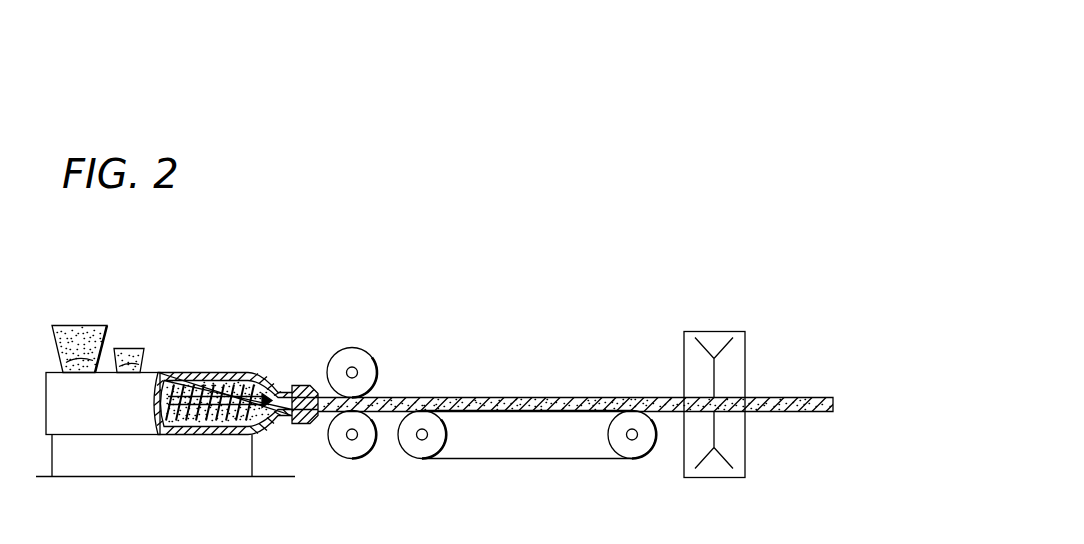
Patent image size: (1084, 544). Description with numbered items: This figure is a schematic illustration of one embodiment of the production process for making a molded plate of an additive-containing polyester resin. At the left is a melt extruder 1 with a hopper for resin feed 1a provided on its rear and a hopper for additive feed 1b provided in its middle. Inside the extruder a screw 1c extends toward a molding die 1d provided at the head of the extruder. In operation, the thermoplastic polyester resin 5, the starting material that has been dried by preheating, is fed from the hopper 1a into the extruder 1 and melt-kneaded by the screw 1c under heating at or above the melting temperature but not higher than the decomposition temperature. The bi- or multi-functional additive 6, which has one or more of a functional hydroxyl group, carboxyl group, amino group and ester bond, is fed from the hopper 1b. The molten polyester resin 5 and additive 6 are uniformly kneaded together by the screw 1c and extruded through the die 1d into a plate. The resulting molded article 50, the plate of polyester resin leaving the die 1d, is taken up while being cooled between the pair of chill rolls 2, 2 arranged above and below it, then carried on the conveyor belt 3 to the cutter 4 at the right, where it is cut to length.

The melt extruder 1 is at (223, 371).
The hopper for resin feed 1a is at (52, 326).
The hopper for additive feed 1b is at (143, 346).
The screw 1c is at (211, 436).
The molding die 1d is at (299, 385).
The pair of chill rolls 2 is at (352, 348).
The conveyor belt 3 is at (547, 412).
The cutter 4 is at (692, 331).
The thermoplastic polyester resin 5 is at (78, 334).
The bi- or multi-functional additive 6 is at (126, 350).
The molded article 50 is at (469, 397).